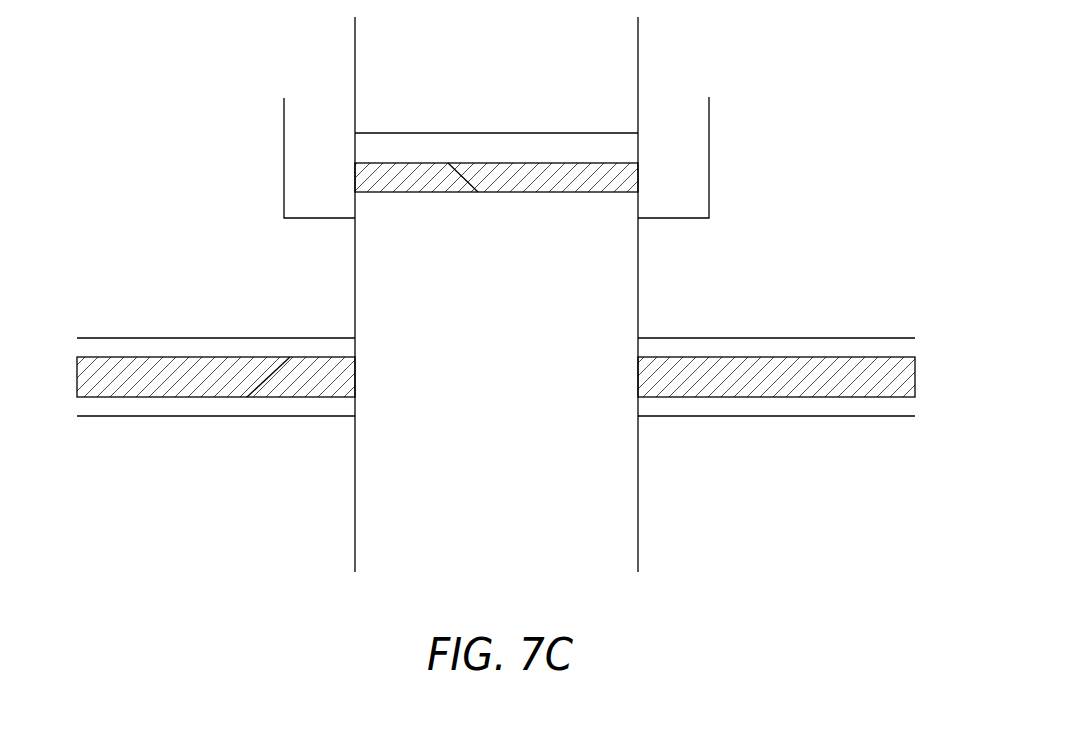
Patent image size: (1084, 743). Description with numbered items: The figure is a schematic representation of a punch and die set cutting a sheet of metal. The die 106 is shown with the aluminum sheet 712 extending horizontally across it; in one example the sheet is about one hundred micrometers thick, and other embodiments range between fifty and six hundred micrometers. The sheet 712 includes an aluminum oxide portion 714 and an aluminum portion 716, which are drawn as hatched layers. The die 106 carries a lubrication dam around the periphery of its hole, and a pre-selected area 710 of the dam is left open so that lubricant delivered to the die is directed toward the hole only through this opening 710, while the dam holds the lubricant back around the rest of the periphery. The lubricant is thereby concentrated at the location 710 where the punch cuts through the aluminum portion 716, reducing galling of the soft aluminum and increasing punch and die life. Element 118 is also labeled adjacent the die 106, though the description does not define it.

The pre-selected area 710 is at (466, 153).
The aluminum sheet 712 is at (193, 368).
The aluminum oxide portion 714 is at (545, 172).
The aluminum portion 716 is at (410, 174).
The die 106 is at (688, 264).
The sidewall 118 is at (625, 292).